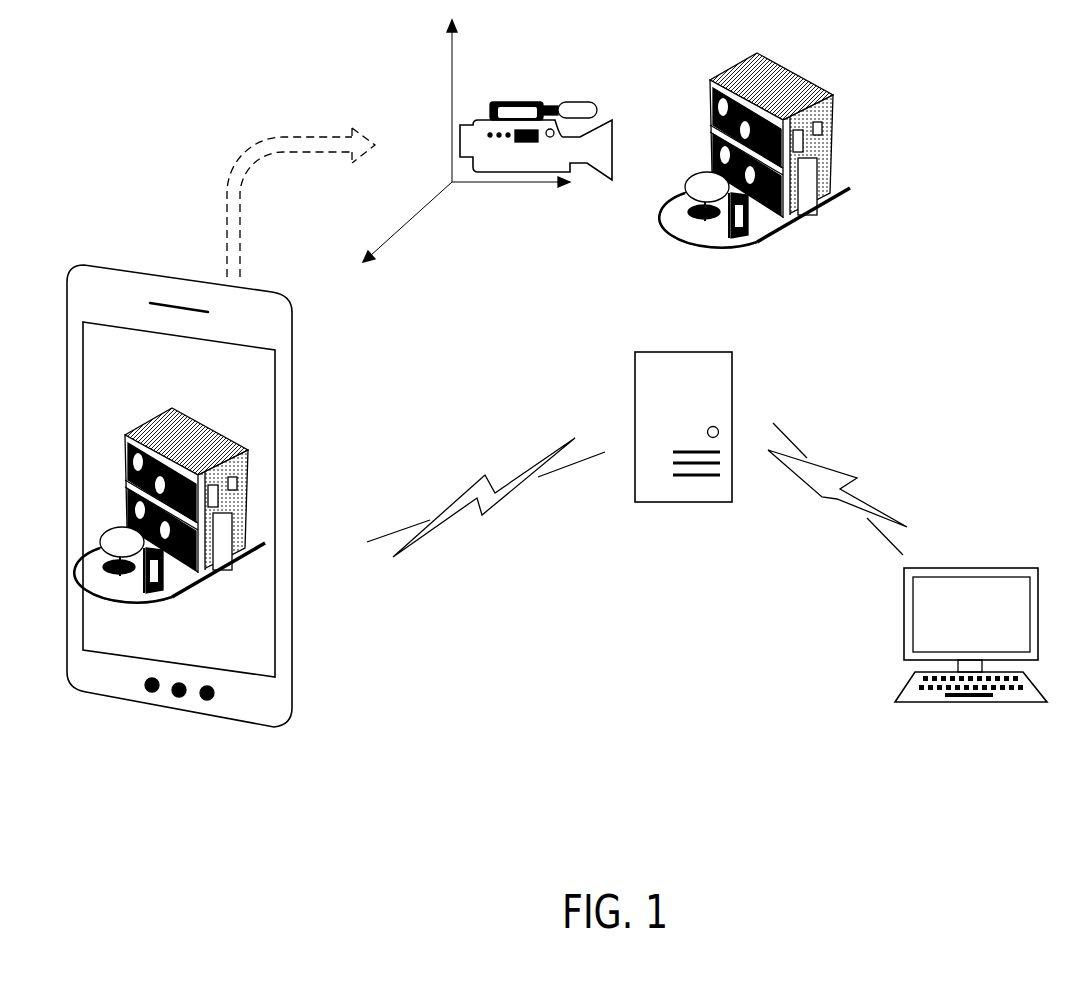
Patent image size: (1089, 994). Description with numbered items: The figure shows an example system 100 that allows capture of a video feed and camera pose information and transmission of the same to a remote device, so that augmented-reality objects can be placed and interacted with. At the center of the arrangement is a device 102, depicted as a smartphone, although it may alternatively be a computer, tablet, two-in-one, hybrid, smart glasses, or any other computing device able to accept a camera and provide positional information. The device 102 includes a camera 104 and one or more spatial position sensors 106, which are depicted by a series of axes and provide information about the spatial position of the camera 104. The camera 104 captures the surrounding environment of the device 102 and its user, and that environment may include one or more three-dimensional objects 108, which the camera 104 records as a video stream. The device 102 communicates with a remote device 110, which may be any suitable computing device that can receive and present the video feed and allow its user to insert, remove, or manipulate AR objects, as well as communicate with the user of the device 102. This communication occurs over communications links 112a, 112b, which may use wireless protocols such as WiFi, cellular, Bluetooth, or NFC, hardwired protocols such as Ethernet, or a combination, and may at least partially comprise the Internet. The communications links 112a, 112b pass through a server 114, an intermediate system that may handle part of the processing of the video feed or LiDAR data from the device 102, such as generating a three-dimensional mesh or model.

The system 100 is at (190, 99).
The device 102 is at (302, 420).
The camera 104 is at (592, 100).
The spatial position sensors 106 is at (442, 228).
The three-dimensional objects 108 is at (833, 122).
The remote device 110 is at (1010, 568).
The communications link 112a is at (532, 564).
The communications link 112b is at (817, 548).
The server 114 is at (702, 537).